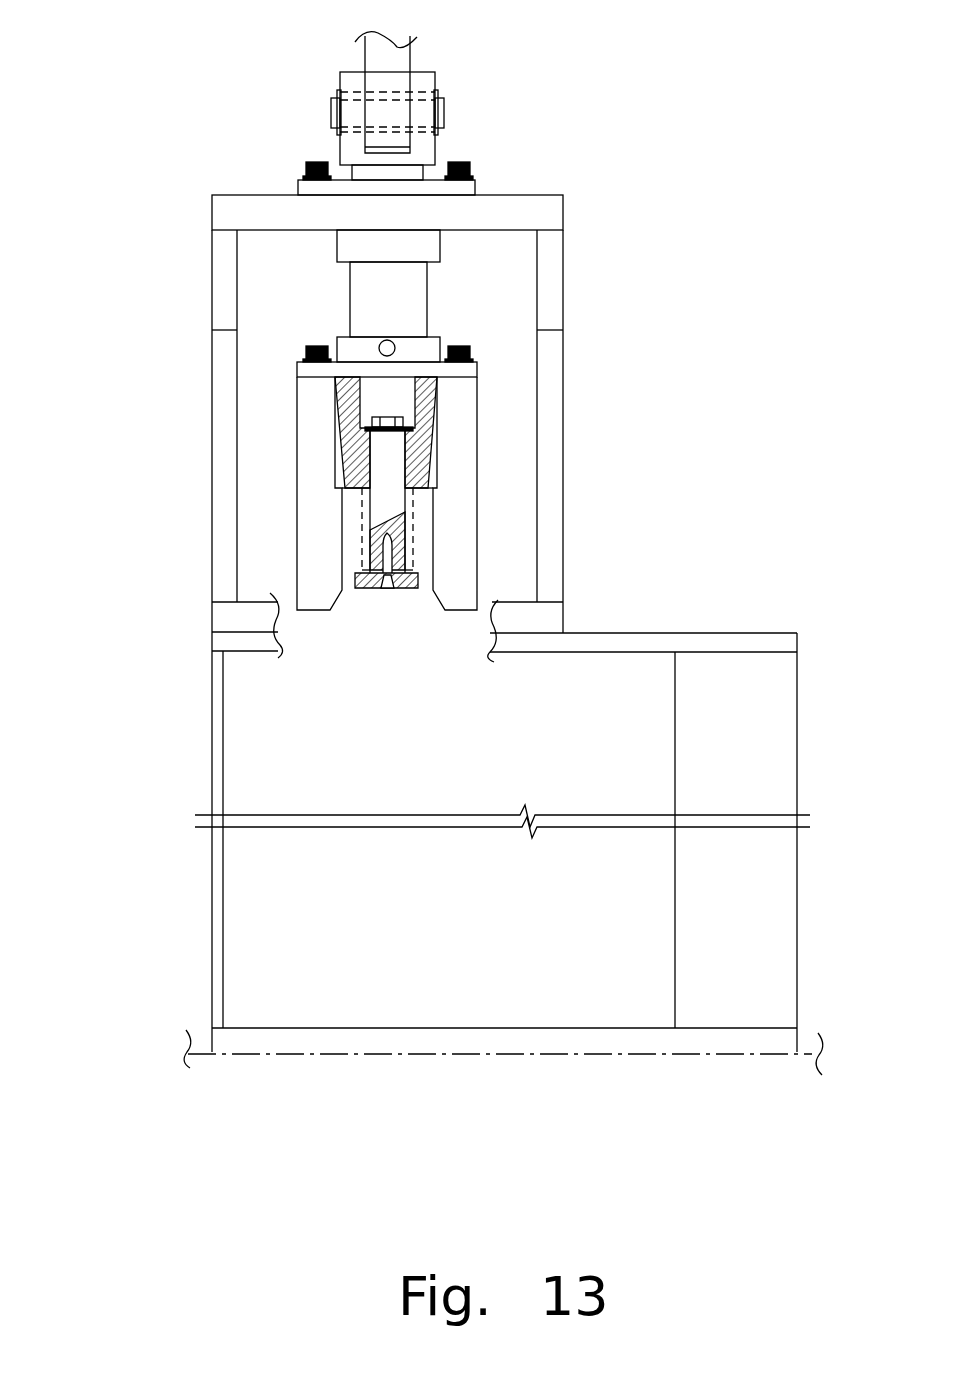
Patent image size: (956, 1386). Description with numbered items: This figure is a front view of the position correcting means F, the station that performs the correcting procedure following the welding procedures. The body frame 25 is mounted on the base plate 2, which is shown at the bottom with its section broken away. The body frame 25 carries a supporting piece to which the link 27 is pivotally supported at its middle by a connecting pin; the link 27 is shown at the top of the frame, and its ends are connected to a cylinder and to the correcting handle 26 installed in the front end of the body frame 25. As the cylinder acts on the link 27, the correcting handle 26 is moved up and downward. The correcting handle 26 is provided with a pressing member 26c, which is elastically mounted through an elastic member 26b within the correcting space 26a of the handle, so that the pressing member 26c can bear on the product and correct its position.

The base plate 2 is at (203, 1054).
The body frame 25 is at (208, 568).
The correcting handle 26 is at (268, 282).
The correcting space 26a is at (420, 513).
The elastic member 26b is at (403, 562).
The pressing member 26c is at (390, 458).
The link 27 is at (382, 67).
The position correcting means F is at (613, 268).